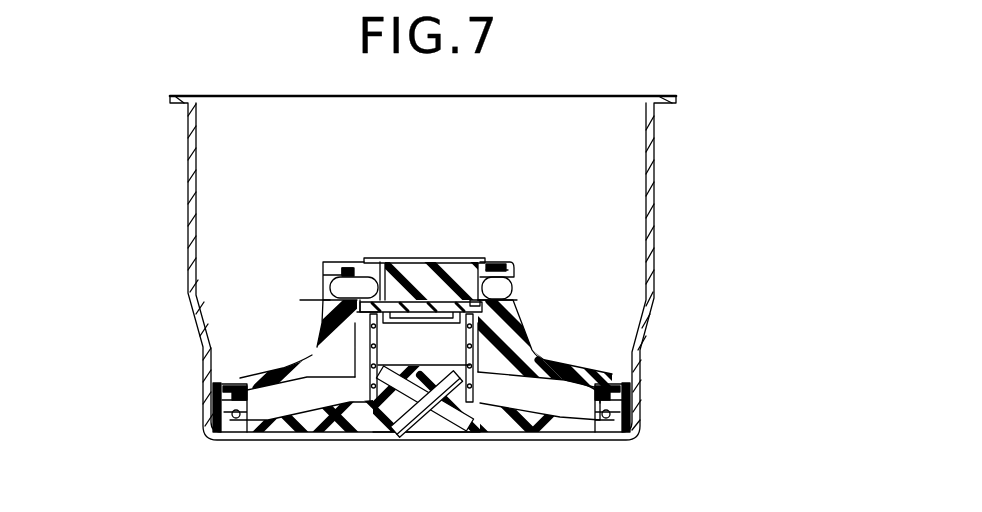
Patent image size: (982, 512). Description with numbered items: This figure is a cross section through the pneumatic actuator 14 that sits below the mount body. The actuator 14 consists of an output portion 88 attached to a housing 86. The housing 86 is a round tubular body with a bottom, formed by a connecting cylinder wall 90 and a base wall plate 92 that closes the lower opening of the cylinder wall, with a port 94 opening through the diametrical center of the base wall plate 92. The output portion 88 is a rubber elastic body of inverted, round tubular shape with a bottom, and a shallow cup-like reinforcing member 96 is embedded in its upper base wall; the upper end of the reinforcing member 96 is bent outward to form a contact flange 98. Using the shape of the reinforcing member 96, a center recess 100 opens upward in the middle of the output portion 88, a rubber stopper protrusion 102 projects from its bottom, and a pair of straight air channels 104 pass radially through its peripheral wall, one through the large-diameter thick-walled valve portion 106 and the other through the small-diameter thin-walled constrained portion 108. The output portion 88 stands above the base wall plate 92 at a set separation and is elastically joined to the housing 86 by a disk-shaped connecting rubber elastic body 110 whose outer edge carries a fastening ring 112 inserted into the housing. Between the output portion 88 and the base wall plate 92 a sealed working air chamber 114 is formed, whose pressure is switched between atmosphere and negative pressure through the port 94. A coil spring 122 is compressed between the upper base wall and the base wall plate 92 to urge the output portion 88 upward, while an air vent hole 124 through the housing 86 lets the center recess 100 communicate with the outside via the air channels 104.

The actuator 14 is at (712, 156).
The housing 86 is at (658, 258).
The output portion 88 is at (340, 327).
The connecting cylinder wall 90 is at (192, 190).
The base wall plate 92 is at (316, 434).
The port 94 is at (432, 420).
The reinforcing member 96 is at (478, 305).
The contact flange 98 is at (355, 264).
The center recess 100 is at (378, 260).
The stopper protrusion 102 is at (433, 270).
The air channel 104 is at (338, 290).
The thick-walled valve portion 106 is at (335, 260).
The thin-walled constrained portion 108 is at (490, 262).
The connecting rubber elastic body 110 is at (288, 368).
The fastening ring 112 is at (220, 396).
The working air chamber 114 is at (443, 359).
The coil spring 122 is at (476, 372).
The air vent hole 124 is at (203, 374).